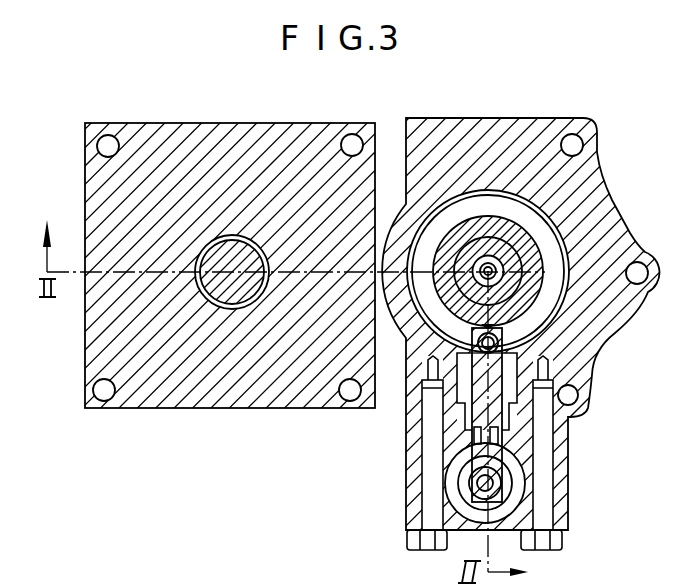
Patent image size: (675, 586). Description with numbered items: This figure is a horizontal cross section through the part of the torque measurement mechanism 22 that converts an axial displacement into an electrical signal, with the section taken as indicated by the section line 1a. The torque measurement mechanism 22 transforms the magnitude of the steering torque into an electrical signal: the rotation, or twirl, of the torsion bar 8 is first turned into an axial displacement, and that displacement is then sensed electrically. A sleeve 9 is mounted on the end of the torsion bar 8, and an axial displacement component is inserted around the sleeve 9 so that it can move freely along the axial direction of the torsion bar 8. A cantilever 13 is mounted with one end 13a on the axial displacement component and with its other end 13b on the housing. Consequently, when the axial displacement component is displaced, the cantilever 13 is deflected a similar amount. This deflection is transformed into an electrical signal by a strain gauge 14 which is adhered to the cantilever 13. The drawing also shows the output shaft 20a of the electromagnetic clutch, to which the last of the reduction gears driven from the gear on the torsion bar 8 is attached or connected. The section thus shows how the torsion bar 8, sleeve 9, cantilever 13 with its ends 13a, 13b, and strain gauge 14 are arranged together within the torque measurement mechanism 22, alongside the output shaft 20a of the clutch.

The housing 1a is at (512, 523).
The torsion bar 8 is at (503, 268).
The sleeve 9 is at (450, 238).
The cantilever 13 is at (492, 459).
The end of cantilever 13a is at (498, 342).
The other end of cantilever 13b is at (498, 493).
The strain gauge 14 is at (498, 438).
The output shaft 20a is at (233, 290).
The torque measurement mechanism 22 is at (494, 414).